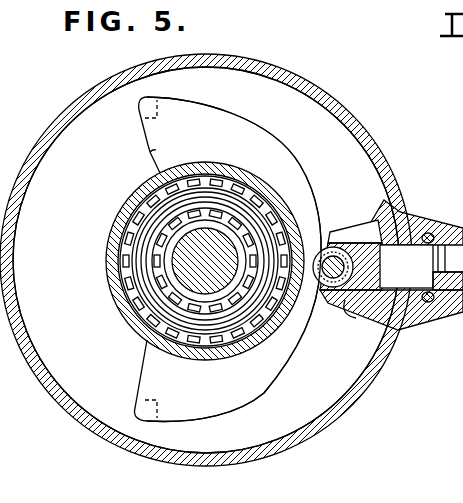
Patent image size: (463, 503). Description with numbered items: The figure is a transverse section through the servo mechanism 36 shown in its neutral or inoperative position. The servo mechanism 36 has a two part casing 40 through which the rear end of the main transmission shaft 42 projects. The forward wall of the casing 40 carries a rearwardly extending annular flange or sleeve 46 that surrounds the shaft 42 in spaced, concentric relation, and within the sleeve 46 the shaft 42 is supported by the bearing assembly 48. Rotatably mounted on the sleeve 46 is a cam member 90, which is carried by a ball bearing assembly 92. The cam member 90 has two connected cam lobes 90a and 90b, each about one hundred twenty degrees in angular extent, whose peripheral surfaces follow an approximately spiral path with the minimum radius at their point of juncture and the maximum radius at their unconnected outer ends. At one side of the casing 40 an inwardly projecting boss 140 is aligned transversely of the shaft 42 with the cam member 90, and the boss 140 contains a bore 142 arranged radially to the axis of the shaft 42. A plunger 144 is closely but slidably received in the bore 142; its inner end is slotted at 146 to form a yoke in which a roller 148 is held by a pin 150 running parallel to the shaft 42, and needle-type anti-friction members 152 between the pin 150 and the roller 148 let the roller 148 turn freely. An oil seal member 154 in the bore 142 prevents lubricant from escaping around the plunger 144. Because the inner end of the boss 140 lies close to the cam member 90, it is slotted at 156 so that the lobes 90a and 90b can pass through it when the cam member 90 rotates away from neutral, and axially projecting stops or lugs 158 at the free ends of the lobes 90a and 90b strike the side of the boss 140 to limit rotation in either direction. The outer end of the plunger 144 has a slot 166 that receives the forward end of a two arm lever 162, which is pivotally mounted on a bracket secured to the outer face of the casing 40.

The servo mechanism 36 is at (303, 78).
The casing 40 is at (343, 112).
The main transmission shaft 42 is at (205, 261).
The annular flange or sleeve 46 is at (162, 287).
The bearing assembly 48 is at (135, 300).
The cam member 90 is at (148, 148).
The cam lobe 90a is at (223, 131).
The cam lobe 90b is at (205, 402).
The ball bearing assembly 92 is at (133, 273).
The boss 140 is at (360, 222).
The bore 142 is at (403, 312).
The plunger 144 is at (406, 266).
The slot 146 is at (352, 228).
The roller 148 is at (313, 306).
The pin 150 is at (342, 288).
The anti-friction members 152 is at (325, 242).
The oil seal member 154 is at (395, 236).
The slot 156 is at (356, 318).
The stops or lugs 158 is at (158, 98).
The two arm lever 162 is at (448, 292).
The slot 166 is at (430, 233).